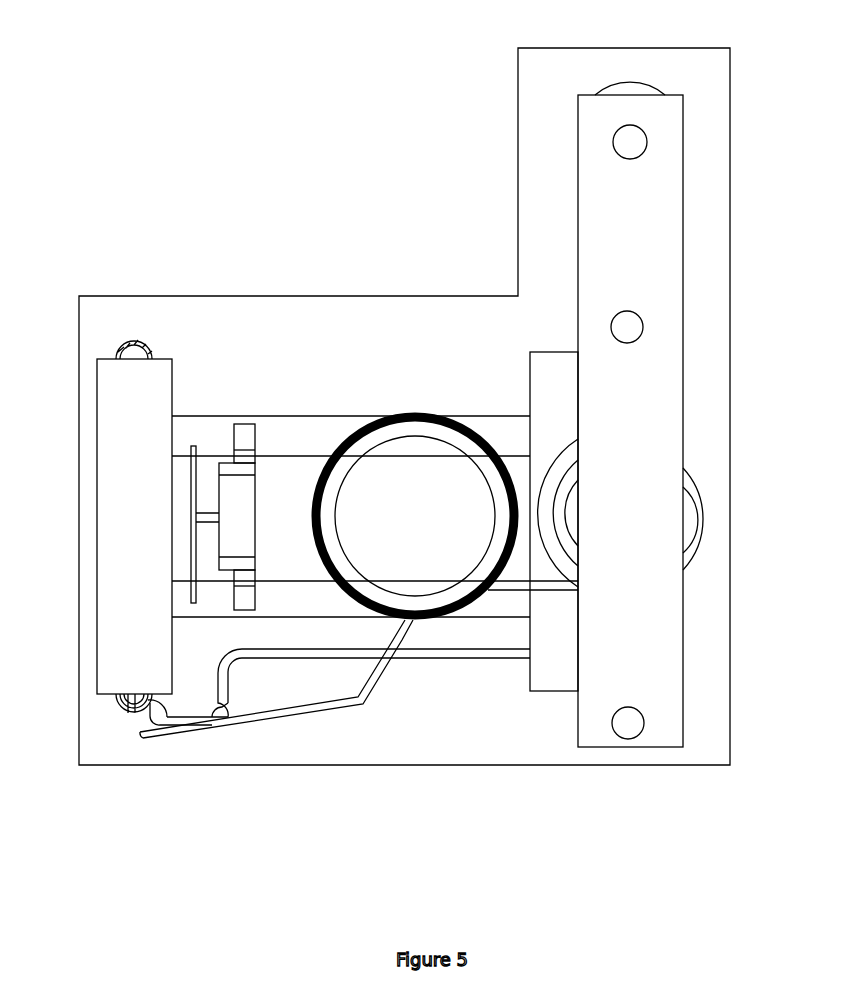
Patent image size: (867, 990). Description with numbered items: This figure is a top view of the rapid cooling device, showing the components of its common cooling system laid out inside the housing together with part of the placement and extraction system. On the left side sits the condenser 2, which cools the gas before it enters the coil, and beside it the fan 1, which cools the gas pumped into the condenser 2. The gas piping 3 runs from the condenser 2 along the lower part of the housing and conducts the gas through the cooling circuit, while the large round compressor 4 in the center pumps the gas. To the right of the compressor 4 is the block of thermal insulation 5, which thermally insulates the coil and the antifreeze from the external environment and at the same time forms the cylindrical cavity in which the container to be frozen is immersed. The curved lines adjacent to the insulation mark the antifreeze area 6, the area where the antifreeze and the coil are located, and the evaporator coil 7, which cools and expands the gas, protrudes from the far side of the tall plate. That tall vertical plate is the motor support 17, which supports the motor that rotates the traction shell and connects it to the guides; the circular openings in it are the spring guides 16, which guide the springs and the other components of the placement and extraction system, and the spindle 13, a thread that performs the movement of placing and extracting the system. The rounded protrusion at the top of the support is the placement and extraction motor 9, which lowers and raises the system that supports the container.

The fan 1 is at (237, 502).
The condenser 2 is at (131, 386).
The gas piping 3 is at (278, 660).
The compressor 4 is at (419, 607).
The thermal insulation 5 is at (550, 662).
The antifreeze area 6 is at (560, 470).
The evaporator coil 7 is at (703, 513).
The placement and extraction motor 9 is at (652, 83).
The spindle 13 is at (647, 142).
The spring guides 16 is at (643, 327).
The motor support 17 is at (657, 218).